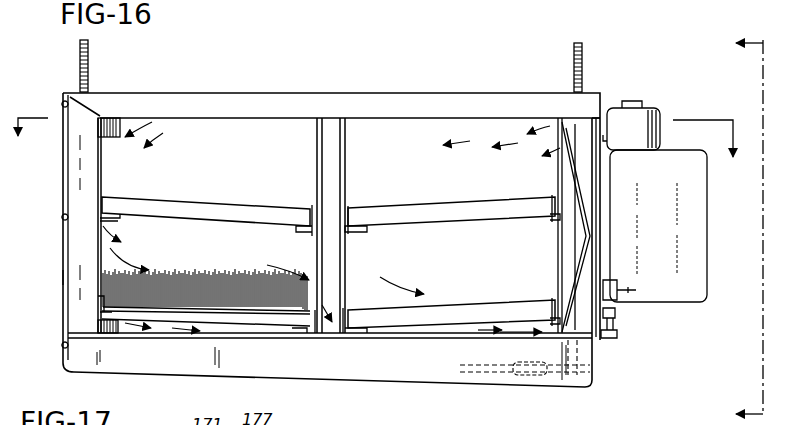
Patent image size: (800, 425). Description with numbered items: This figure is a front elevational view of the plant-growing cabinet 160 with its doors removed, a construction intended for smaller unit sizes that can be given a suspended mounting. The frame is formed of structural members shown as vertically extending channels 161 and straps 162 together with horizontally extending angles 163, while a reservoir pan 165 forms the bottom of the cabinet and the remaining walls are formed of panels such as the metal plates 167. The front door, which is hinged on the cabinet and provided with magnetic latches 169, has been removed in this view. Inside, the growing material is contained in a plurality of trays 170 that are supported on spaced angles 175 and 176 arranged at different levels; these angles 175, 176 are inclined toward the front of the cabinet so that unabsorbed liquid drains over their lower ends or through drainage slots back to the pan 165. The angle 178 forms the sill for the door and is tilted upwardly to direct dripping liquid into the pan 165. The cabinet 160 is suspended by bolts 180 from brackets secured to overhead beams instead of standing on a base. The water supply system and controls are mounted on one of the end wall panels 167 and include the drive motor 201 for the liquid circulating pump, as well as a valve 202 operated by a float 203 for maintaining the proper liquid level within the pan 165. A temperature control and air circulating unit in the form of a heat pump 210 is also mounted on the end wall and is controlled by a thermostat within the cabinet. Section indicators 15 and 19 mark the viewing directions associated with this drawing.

The section line 15- 15 is at (375, 149).
The section line 19- 19 is at (734, 229).
The cabinet 160 is at (189, 79).
The vertically extending channels 161 is at (75, 204).
The straps 162 is at (340, 130).
The horizontally extending angles 163 is at (383, 98).
The reservoir pan 165 is at (408, 372).
The metal plates 167 is at (65, 277).
The magnetic latches 169 is at (66, 95).
The trays 170 is at (201, 207).
The angles 175 is at (117, 218).
The angles 176 is at (309, 231).
The angle 178 is at (148, 337).
The bolts 180 is at (80, 62).
The drive motor 201 is at (643, 108).
The valve 202 is at (614, 303).
The float 203 is at (525, 372).
The heat pump 210 is at (700, 223).